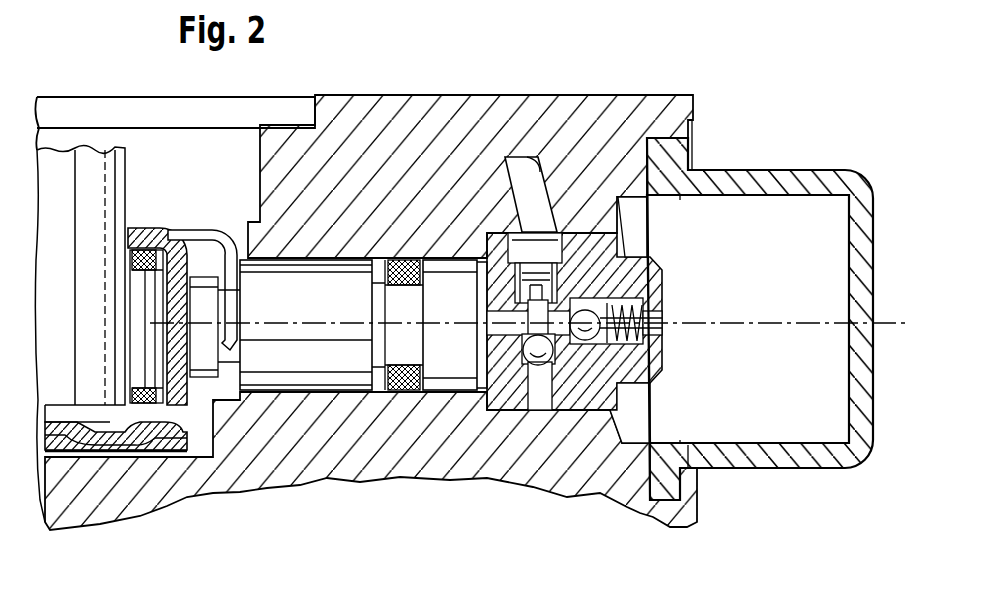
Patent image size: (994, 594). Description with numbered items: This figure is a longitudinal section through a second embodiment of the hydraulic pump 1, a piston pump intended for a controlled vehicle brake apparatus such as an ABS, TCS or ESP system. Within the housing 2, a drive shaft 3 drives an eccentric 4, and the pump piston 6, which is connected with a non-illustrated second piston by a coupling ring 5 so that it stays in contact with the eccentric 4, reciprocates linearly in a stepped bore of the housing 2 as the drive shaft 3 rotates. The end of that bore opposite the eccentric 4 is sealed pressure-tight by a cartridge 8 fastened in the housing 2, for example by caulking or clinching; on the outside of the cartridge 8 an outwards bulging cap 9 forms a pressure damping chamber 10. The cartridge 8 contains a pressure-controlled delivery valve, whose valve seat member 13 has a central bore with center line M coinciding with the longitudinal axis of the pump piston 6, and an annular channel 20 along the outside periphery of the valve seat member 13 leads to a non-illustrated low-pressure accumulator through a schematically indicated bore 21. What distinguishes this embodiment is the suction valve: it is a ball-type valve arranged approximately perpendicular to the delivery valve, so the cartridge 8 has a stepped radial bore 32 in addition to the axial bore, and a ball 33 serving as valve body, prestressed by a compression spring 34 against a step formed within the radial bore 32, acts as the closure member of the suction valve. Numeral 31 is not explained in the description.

The hydraulic pump 1 is at (713, 93).
The housing 2 is at (80, 498).
The drive shaft 3 is at (57, 168).
The eccentric 4 is at (107, 442).
The coupling ring 5 is at (200, 236).
The pump piston 6 is at (297, 360).
The cartridge 8 is at (665, 254).
The cap 9 is at (740, 183).
The pressure damping chamber 10 is at (818, 422).
The valve seat member 13 is at (667, 361).
The annular channel 20 is at (567, 233).
The bore 21 is at (518, 150).
The seal rings 31 is at (412, 392).
The stepped radial bore 32 is at (540, 396).
The ball 33 is at (525, 338).
The compression spring 34 is at (527, 309).
The center line M is at (818, 308).